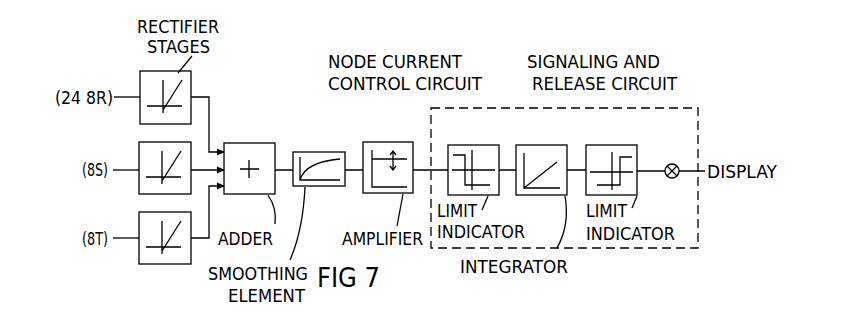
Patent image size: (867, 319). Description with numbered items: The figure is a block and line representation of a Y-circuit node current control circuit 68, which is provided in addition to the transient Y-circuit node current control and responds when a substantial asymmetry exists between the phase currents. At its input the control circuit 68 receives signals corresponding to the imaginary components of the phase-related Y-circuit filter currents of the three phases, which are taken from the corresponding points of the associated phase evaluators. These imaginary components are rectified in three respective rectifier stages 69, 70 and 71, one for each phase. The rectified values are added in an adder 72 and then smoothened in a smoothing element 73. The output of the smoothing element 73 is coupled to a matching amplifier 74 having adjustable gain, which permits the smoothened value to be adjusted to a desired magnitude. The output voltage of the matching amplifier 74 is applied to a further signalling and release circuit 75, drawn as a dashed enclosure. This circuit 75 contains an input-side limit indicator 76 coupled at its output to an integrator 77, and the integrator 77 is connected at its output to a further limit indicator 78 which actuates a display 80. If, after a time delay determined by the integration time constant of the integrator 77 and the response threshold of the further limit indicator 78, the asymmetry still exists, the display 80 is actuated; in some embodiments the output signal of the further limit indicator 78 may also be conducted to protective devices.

The Y-circuit node currents control circuit 68 is at (339, 95).
The rectifier stage 69 is at (140, 77).
The rectifier stage 70 is at (139, 154).
The rectifier stage 71 is at (139, 220).
The adder 72 is at (262, 196).
The smoothing element 73 is at (317, 187).
The matching amplifier 74 is at (395, 194).
The further signalling and release circuit 75 is at (528, 82).
The input-side limit indicator 76 is at (467, 145).
The integrator 77 is at (534, 145).
The further limit indicator 78 is at (597, 145).
The display 80 is at (672, 164).